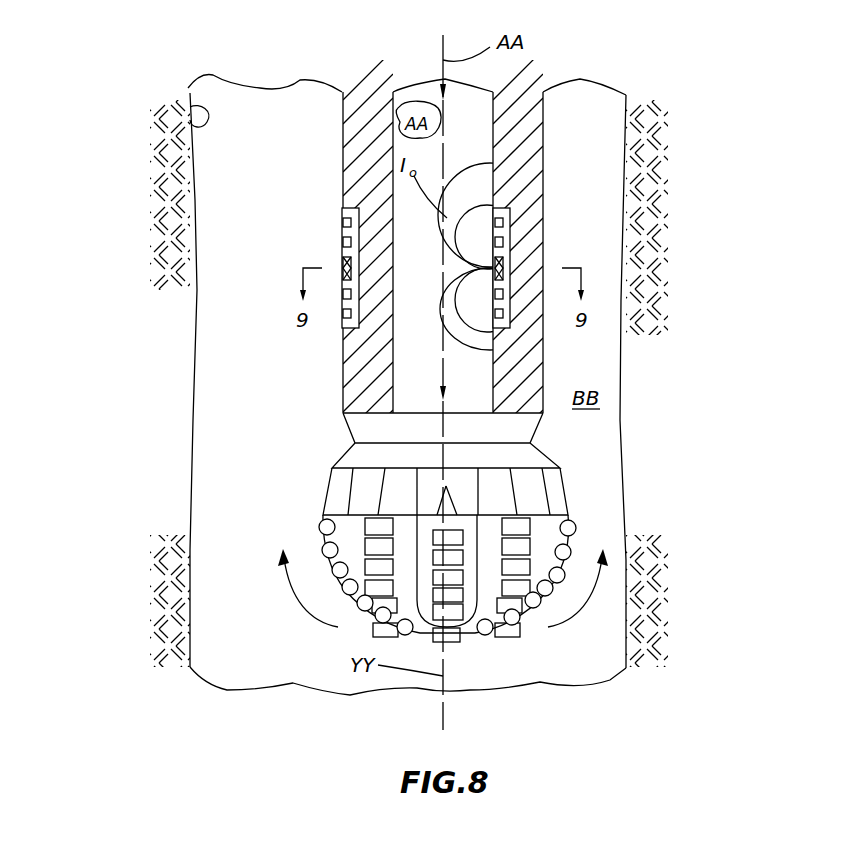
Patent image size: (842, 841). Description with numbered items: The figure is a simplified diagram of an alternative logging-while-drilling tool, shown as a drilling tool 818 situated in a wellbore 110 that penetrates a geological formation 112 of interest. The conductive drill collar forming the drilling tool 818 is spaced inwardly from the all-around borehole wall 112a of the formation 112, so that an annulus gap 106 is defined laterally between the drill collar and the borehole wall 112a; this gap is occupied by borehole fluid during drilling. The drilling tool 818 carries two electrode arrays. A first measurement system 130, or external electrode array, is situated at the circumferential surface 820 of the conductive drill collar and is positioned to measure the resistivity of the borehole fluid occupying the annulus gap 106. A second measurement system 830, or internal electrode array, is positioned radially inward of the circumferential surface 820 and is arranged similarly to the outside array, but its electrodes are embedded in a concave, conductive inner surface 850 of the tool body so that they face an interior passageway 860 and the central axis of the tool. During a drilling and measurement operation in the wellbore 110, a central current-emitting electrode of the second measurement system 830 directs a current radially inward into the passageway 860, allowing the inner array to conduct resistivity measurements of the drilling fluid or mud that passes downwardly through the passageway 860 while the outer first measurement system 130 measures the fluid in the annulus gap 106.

The wellbore 110 is at (453, 325).
The geological formation 112 is at (755, 229).
The borehole wall 112a is at (189, 104).
The annulus gap 106 is at (287, 437).
The first measurement system 130 is at (340, 262).
The interior passageway 860 is at (476, 116).
The drilling tool 818 is at (547, 156).
The second measurement system 830 is at (510, 252).
The conductive inner surface 850 is at (510, 263).
The circumferential surface 820 is at (552, 343).